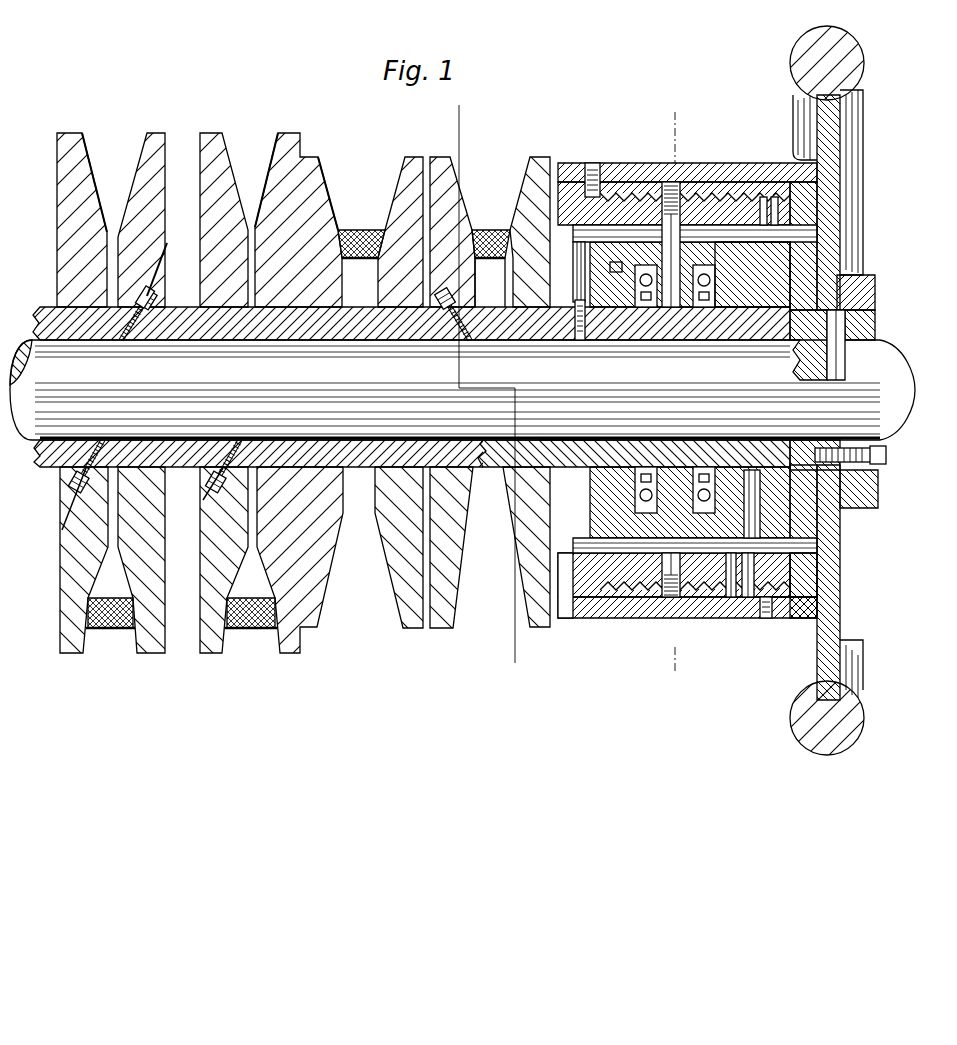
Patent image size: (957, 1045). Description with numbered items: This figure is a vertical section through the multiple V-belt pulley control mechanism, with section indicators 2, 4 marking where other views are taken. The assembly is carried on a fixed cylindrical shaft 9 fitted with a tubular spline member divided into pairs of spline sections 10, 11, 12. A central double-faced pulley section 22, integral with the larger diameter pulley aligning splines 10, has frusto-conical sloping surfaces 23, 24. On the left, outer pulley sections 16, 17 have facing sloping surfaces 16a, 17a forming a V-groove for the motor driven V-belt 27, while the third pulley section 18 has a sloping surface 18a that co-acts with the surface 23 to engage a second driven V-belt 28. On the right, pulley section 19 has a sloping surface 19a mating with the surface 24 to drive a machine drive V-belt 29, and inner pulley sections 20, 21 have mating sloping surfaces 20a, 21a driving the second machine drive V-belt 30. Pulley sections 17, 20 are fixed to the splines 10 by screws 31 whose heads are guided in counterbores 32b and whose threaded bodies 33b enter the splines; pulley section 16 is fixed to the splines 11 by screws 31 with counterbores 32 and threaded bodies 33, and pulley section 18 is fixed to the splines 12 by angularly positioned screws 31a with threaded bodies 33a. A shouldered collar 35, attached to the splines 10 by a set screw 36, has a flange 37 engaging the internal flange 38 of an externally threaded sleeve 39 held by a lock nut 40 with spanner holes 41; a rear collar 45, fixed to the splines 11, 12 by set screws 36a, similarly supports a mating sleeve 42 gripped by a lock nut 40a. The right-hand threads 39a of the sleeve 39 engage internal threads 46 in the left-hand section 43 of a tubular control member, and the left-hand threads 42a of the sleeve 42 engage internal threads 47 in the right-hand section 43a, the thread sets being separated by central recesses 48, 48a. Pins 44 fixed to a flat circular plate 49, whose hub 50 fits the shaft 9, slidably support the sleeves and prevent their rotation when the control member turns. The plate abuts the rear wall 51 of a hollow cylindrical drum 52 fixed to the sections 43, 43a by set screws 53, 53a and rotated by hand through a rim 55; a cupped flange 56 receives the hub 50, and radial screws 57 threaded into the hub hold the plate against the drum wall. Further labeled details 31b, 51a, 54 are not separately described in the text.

The section line 2- 2 is at (424, 105).
The section line 4- 4 is at (640, 112).
The fixed shaft 9 is at (906, 414).
The spline section 10 is at (50, 307).
The spline section 11 is at (567, 440).
The spline section 12 is at (349, 468).
The outer pulley section 16 is at (66, 133).
The sloping frusto-conical surface 16a is at (91, 146).
The outer pulley section 17 is at (158, 133).
The sloping frusto-conical surface 17a is at (135, 656).
The pulley section 18 is at (213, 133).
The sloping surface 18a is at (220, 656).
The outer pulley section 19 is at (402, 157).
The sloping surface 19a is at (393, 590).
The inner pulley section 20 is at (440, 157).
The mating sloping surface 20a is at (467, 208).
The inner pulley section 21 is at (538, 157).
The mating sloping surface 21a is at (513, 553).
The central pulley section 22 is at (296, 133).
The frusto-conical sloping surface 23 is at (276, 142).
The frusto-conical sloping surface 24 is at (326, 187).
The motor driven V-belt 27 is at (103, 630).
The second driven V-belt 28 is at (262, 630).
The machine drive V-belt 29 is at (362, 228).
The second machine drive V-belt 30 is at (490, 260).
The screw 31 is at (63, 510).
The angularly positioned screw 31a is at (203, 500).
The bolt head 31b is at (163, 290).
The counterbore 32 is at (65, 528).
The counterbore 32b is at (165, 246).
The externally threaded body 33 is at (112, 438).
The externally threaded body 33a is at (252, 440).
The externally threaded body 33b is at (125, 345).
The shouldered collar 35 is at (613, 300).
The set screw 36 is at (582, 340).
The set screw 36a is at (748, 505).
The circular flange 37 is at (593, 272).
The internal flange 38 is at (633, 288).
The externally threaded sleeve 39 is at (593, 220).
The right-hand threads 39a is at (640, 197).
The lock nut 40 is at (648, 490).
The lock nut 40a is at (703, 470).
The spanner holes 41 is at (620, 256).
The externally threaded sleeve 42 is at (731, 567).
The left-hand external threads 42a is at (748, 567).
The left-hand section of control member 43 is at (603, 614).
The right-hand section of control member 43a is at (780, 592).
The pin 44 is at (707, 232).
The rear shouldered collar 45 is at (737, 310).
The internal threads 46 is at (613, 197).
The internal threads 47 is at (763, 200).
The central recess 48 is at (683, 593).
The central recess 48a is at (680, 592).
The flat circular plate 49 is at (813, 577).
The central hub 50 is at (866, 318).
The rear wall 51 is at (848, 196).
The rim 51a is at (815, 117).
The hollow cylindrical drum 52 is at (575, 618).
The set screw 53 is at (590, 163).
The set screw 53a is at (770, 610).
The key 54 is at (855, 380).
The rim 55 is at (851, 740).
The cupped flange 56 is at (879, 500).
The radially positioned screw 57 is at (887, 455).